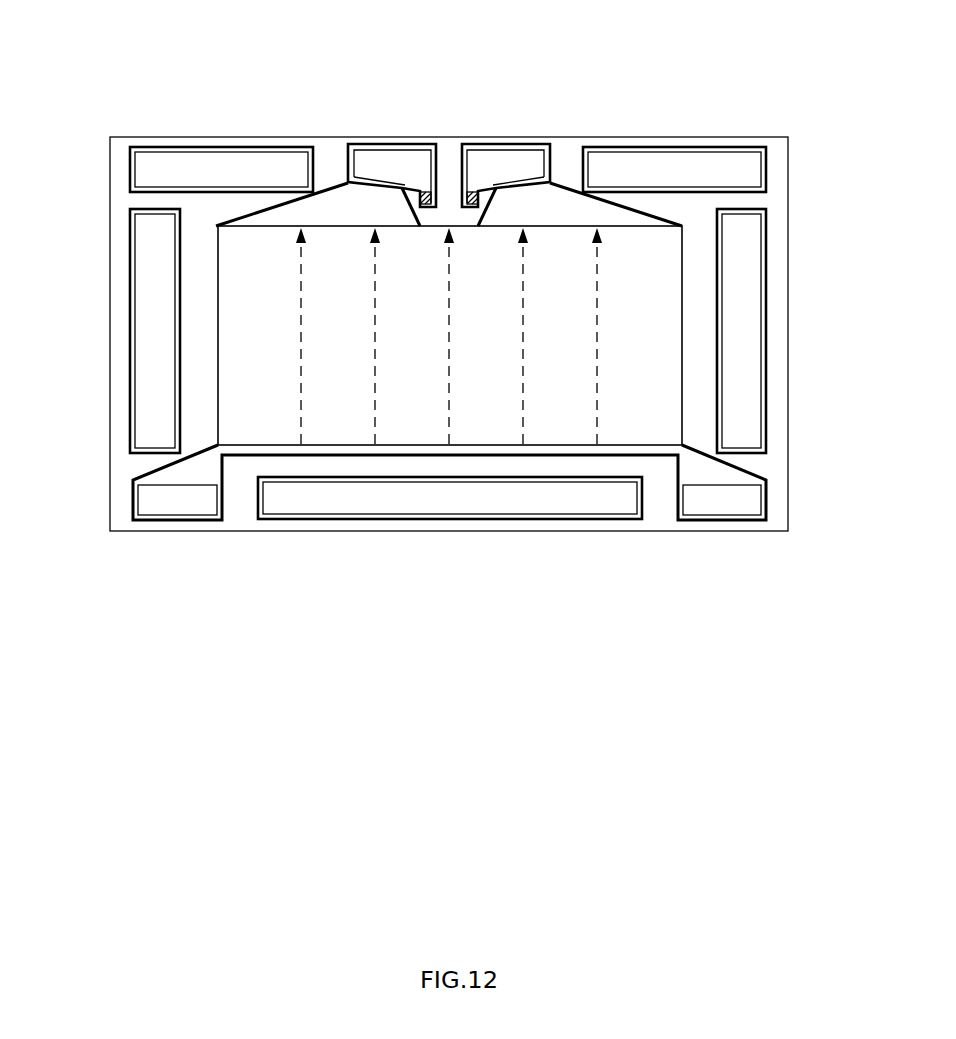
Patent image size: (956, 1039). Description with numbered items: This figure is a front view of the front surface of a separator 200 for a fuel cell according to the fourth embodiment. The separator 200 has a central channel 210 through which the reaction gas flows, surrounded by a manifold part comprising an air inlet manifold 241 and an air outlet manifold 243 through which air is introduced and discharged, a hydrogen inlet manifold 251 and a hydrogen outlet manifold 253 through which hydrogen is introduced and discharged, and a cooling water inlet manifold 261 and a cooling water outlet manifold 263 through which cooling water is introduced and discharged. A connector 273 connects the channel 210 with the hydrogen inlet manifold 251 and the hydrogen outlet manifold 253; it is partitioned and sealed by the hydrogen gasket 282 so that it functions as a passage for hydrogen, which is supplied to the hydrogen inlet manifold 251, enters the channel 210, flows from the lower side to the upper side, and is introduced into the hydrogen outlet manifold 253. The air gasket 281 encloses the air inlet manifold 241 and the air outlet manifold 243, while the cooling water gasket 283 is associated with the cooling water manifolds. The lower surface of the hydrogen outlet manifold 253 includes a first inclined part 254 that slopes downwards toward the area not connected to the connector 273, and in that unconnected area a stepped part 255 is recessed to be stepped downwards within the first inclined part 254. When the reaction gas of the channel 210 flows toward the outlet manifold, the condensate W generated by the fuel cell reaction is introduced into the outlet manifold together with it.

The separator 200 is at (131, 35).
The channel 210 is at (555, 283).
The air inlet manifold 241 is at (218, 168).
The air outlet manifold 243 is at (548, 508).
The hydrogen inlet manifold 251 is at (745, 497).
The hydrogen outlet manifold 253 is at (373, 172).
The first inclined part 254 is at (388, 178).
The stepped part 255 is at (438, 195).
The cooling water inlet manifold 261 is at (745, 385).
The cooling water outlet manifold 263 is at (153, 385).
The connector 273 is at (328, 218).
The air gasket 281 is at (168, 150).
The hydrogen gasket 282 is at (420, 193).
The cooling water gasket 283 is at (130, 333).
The condensate W is at (468, 193).